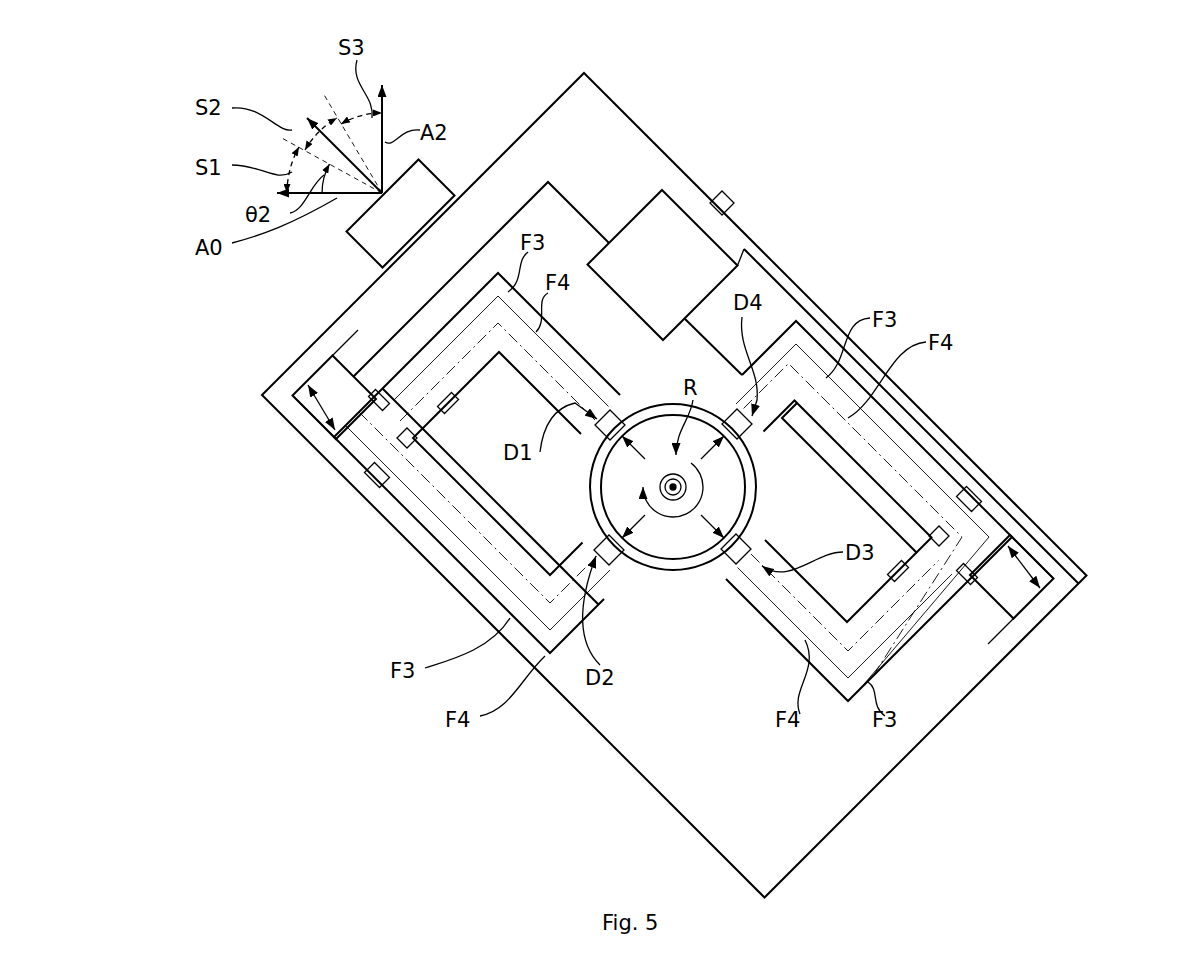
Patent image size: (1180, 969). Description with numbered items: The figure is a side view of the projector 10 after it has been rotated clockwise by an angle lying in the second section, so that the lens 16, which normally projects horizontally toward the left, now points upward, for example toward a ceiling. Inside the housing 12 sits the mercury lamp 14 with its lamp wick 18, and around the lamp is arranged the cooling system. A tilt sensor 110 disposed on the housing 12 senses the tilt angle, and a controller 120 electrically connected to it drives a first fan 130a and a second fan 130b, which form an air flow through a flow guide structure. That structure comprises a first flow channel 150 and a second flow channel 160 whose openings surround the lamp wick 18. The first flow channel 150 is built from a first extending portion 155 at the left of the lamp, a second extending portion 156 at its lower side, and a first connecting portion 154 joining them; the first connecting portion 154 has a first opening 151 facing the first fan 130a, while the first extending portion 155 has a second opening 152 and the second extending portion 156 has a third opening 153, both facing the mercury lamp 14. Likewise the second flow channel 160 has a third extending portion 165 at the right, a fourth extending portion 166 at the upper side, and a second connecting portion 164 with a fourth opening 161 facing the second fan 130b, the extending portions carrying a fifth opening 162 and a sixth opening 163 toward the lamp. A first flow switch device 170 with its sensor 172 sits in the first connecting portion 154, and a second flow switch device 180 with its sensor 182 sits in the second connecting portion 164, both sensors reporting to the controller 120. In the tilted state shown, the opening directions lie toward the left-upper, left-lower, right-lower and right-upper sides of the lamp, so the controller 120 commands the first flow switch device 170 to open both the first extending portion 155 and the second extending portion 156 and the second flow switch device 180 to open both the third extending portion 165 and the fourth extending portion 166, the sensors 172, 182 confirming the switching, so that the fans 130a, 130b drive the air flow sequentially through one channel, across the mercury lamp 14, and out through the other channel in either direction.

The projector 10 is at (58, 44).
The housing 12 is at (598, 82).
The mercury lamp 14 is at (656, 590).
The lens 16 is at (370, 240).
The lamp wick 18 is at (685, 488).
The tilt sensor 110 is at (732, 193).
The controller 120 is at (655, 230).
The first fan 130a is at (333, 375).
The second fan 130b is at (1012, 600).
The first flow channel 150 is at (439, 473).
The first opening 151 is at (294, 393).
The second opening 152 is at (622, 412).
The third opening 153 is at (600, 540).
The first connecting portion 154 is at (367, 462).
The first extending portion 155 is at (398, 480).
The second extending portion 156 is at (447, 533).
The second flow channel 160 is at (911, 511).
The fourth opening 161 is at (1062, 584).
The fifth opening 162 is at (717, 562).
The sixth opening 163 is at (740, 450).
The second connecting portion 164 is at (988, 524).
The third extending portion 165 is at (960, 478).
The fourth extending portion 166 is at (917, 455).
The first flow switch device 170 is at (405, 440).
The sensor 172 is at (378, 392).
The second flow switch device 180 is at (943, 545).
The sensor 182 is at (975, 578).